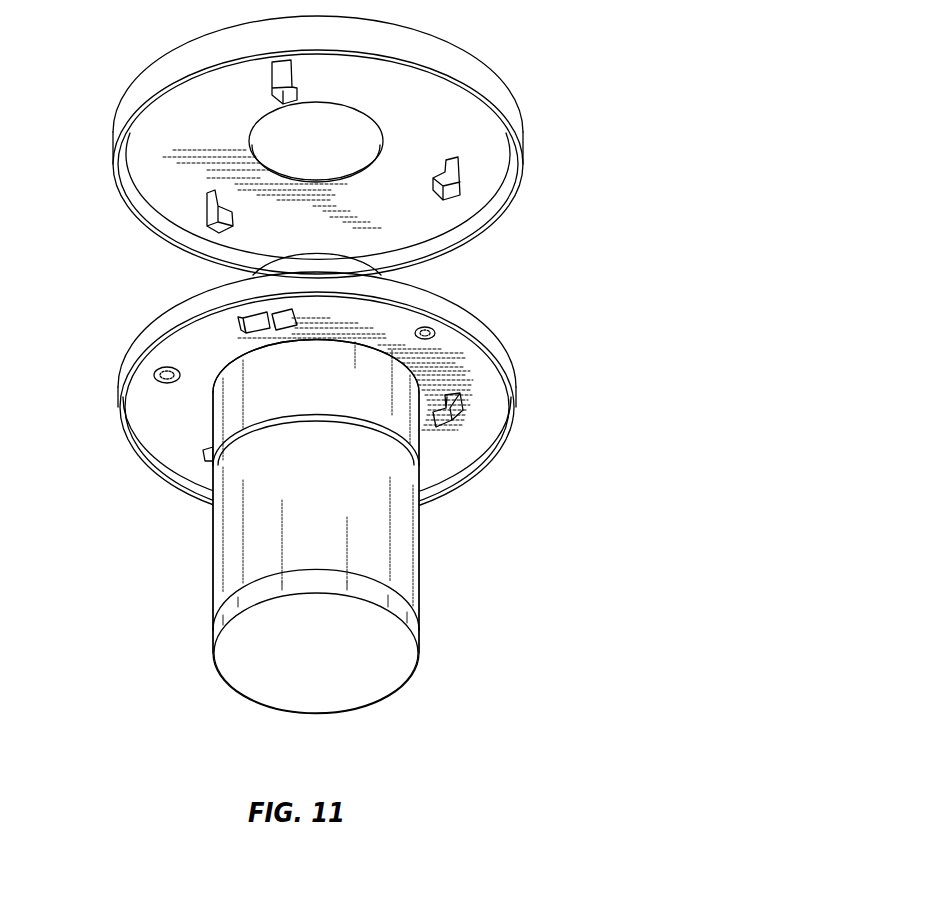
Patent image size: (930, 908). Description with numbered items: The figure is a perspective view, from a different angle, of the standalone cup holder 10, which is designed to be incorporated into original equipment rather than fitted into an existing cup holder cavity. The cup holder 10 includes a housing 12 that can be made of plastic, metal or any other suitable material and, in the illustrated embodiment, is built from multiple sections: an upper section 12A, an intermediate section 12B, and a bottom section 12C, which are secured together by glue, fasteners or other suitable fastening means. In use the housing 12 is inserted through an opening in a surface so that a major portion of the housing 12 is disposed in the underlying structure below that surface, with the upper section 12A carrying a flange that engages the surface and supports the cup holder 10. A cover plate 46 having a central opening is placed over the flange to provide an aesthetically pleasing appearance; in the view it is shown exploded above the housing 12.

The cup holder 10 is at (324, 379).
The housing 12 is at (270, 497).
The upper section 12A is at (233, 405).
The intermediate section 12B is at (377, 543).
The bottom section 12C is at (357, 665).
The cover plate 46 is at (477, 82).